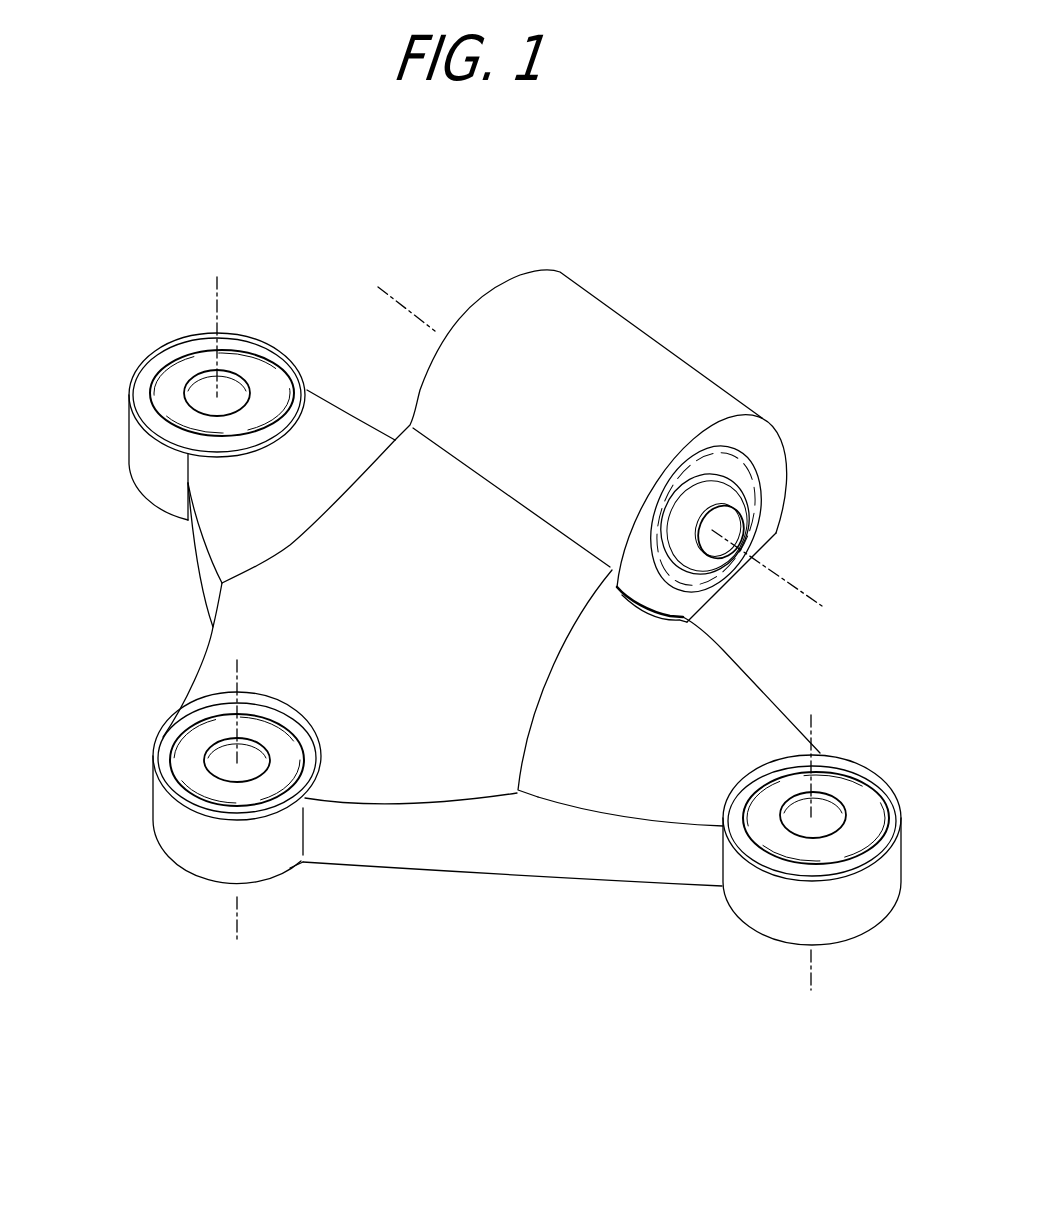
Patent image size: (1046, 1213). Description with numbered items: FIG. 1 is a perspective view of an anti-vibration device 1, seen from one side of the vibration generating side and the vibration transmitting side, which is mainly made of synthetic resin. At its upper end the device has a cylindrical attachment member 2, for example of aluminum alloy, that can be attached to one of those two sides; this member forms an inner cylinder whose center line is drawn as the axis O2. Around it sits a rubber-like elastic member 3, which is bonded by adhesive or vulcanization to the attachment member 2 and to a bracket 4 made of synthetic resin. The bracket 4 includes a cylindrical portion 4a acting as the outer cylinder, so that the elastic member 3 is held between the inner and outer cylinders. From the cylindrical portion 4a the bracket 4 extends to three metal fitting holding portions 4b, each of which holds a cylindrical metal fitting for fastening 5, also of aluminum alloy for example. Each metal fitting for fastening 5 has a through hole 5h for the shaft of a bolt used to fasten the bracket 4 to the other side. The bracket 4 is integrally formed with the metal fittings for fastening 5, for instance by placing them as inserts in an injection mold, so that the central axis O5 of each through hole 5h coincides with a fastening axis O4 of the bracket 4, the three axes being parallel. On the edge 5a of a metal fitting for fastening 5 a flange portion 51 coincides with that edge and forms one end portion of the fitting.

The anti-vibration device 1 is at (370, 236).
The attachment member 2 is at (752, 522).
The elastic member 3 is at (743, 463).
The bracket 4 is at (274, 638).
The cylindrical portion 4a is at (638, 358).
The metal fitting holding portion 4b is at (128, 450).
The metal fitting for fastening 5 is at (165, 391).
The edge 5a is at (253, 358).
The through hole 5h is at (203, 400).
The flange portion 51 is at (286, 418).
The axis of attachment member O2 is at (787, 579).
The fastening axis O4 is at (497, 637).
The central axis of through hole O5 is at (540, 637).